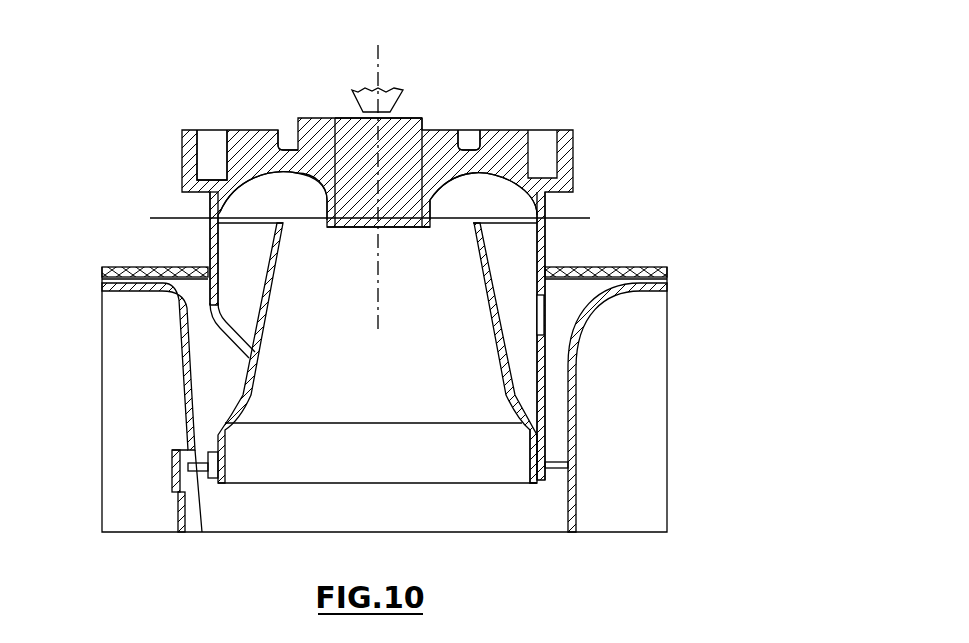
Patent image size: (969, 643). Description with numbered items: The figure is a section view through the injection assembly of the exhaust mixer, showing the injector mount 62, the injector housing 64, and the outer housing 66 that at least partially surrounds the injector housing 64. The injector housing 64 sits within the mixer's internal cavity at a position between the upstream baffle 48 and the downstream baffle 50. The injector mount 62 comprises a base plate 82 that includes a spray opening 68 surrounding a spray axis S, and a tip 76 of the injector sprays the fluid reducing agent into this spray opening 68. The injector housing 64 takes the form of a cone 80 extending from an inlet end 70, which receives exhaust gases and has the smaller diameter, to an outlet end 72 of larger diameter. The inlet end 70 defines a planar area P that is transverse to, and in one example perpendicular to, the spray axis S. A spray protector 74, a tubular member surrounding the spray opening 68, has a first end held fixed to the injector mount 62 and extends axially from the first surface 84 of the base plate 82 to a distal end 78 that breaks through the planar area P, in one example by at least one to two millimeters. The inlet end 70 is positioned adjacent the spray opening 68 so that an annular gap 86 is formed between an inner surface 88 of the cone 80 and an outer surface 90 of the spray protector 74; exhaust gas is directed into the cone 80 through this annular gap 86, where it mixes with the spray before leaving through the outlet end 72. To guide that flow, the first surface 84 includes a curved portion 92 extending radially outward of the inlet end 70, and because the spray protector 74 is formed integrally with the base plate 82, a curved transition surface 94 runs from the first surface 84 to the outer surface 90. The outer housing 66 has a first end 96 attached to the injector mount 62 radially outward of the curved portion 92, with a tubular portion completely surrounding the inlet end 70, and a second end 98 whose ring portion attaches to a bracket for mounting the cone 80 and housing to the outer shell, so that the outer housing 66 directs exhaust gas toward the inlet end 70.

The upstream baffle 48 is at (185, 348).
The downstream baffle 50 is at (568, 500).
The injector mount 62 is at (568, 146).
The injector housing 64 is at (205, 421).
The outer housing 66 is at (210, 232).
The spray opening 68 is at (403, 130).
The inlet end 70 is at (478, 238).
The outlet end 72 is at (533, 480).
The spray protector 74 is at (329, 197).
The tip 76 is at (357, 108).
The distal end 78 is at (430, 232).
The cone 80 is at (238, 368).
The base plate 82 is at (253, 150).
The first surface 84 is at (500, 203).
The annular gap 86 is at (277, 247).
The inner surface 88 is at (252, 347).
The outer surface 90 is at (329, 230).
The curved portion 92 is at (243, 183).
The curved transition surface 94 is at (466, 176).
The first end 96 is at (210, 202).
The second end 98 is at (545, 450).
The spray axis S is at (378, 74).
The planar area P is at (160, 217).